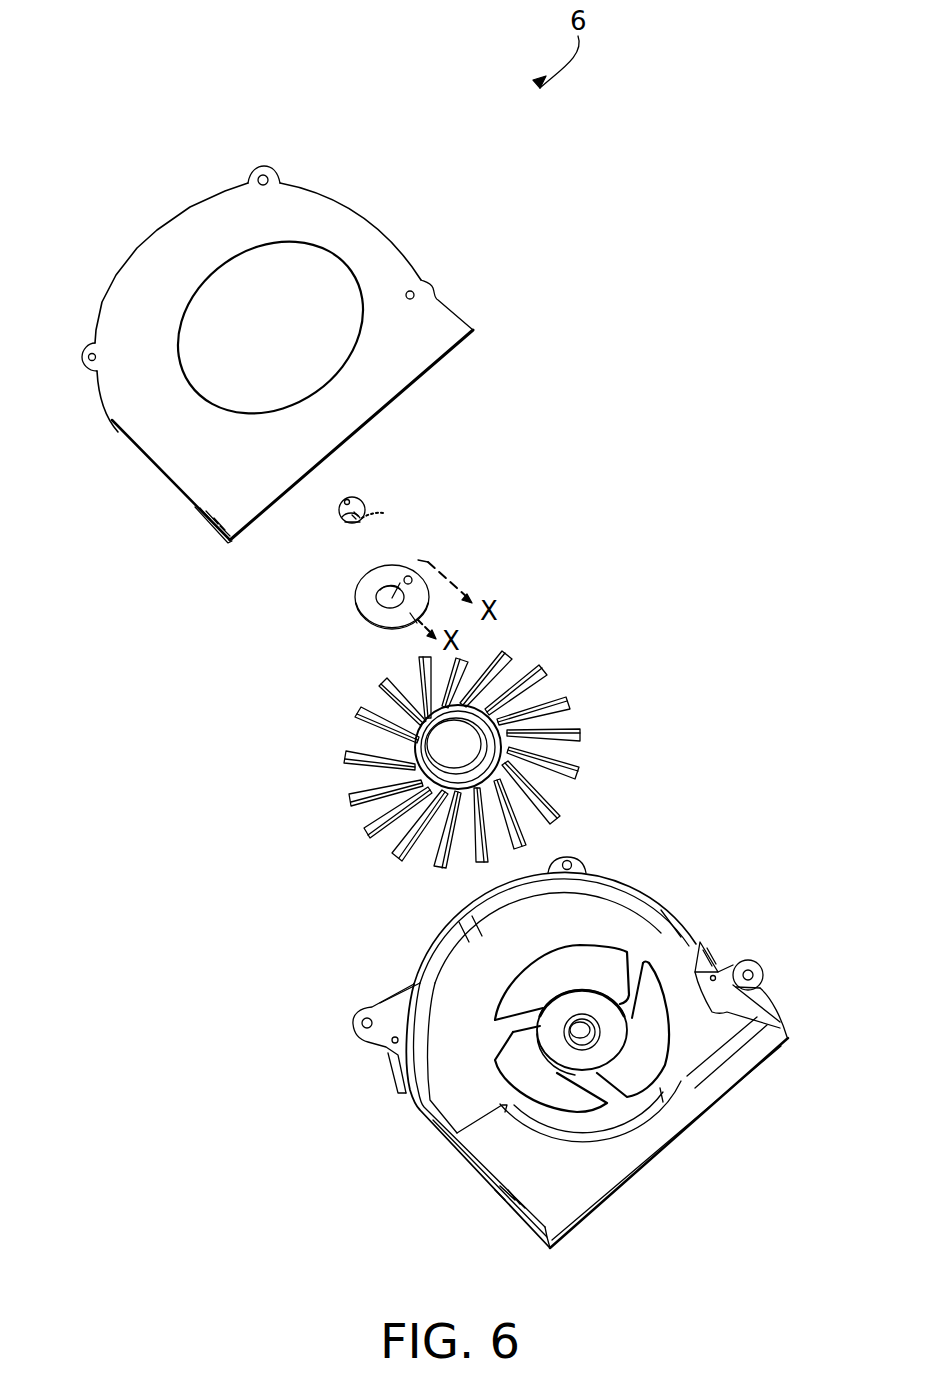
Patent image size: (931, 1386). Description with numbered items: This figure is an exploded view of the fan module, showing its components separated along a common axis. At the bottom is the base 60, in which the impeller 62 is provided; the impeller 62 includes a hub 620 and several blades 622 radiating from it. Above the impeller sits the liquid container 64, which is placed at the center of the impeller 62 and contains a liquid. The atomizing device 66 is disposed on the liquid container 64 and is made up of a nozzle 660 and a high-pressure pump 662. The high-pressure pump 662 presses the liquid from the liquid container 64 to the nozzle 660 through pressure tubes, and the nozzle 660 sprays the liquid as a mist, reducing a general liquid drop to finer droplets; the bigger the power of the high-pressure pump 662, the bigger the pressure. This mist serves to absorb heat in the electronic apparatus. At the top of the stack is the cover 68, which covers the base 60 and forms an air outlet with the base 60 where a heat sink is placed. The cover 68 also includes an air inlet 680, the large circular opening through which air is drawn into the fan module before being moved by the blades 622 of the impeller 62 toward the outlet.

The base 60 is at (702, 1112).
The impeller 62 is at (232, 712).
The hub 620 is at (350, 742).
The blades 622 is at (352, 793).
The liquid container 64 is at (355, 598).
The atomizing device 66 is at (462, 468).
The nozzle 660 is at (363, 497).
The high-pressure pump 662 is at (385, 513).
The cover 68 is at (162, 252).
The air inlet 680 is at (282, 305).